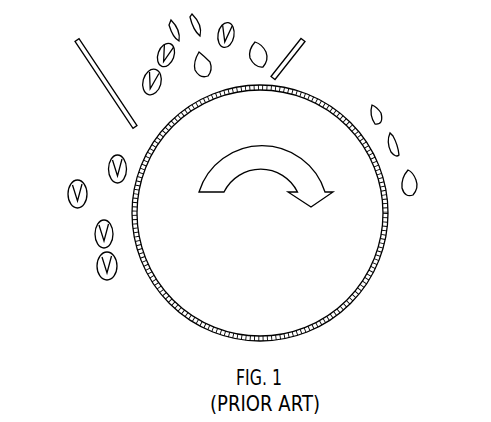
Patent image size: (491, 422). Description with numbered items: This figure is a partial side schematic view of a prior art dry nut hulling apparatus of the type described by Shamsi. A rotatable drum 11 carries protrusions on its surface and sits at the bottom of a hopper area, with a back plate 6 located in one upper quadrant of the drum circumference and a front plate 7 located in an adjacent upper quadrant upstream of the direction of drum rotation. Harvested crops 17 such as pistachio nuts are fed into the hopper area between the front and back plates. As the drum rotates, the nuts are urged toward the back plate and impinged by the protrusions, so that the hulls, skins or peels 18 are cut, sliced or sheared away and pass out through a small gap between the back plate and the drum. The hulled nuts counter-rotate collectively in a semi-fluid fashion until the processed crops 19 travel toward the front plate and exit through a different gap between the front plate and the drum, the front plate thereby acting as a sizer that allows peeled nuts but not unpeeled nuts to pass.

The plate 2 6 is at (292, 62).
The plate 1 7 is at (98, 81).
The rotatable drum 11 is at (330, 295).
The harvested crops 17 is at (168, 34).
The hulls, skins or peels 18 is at (398, 160).
The processed crops 19 is at (93, 233).